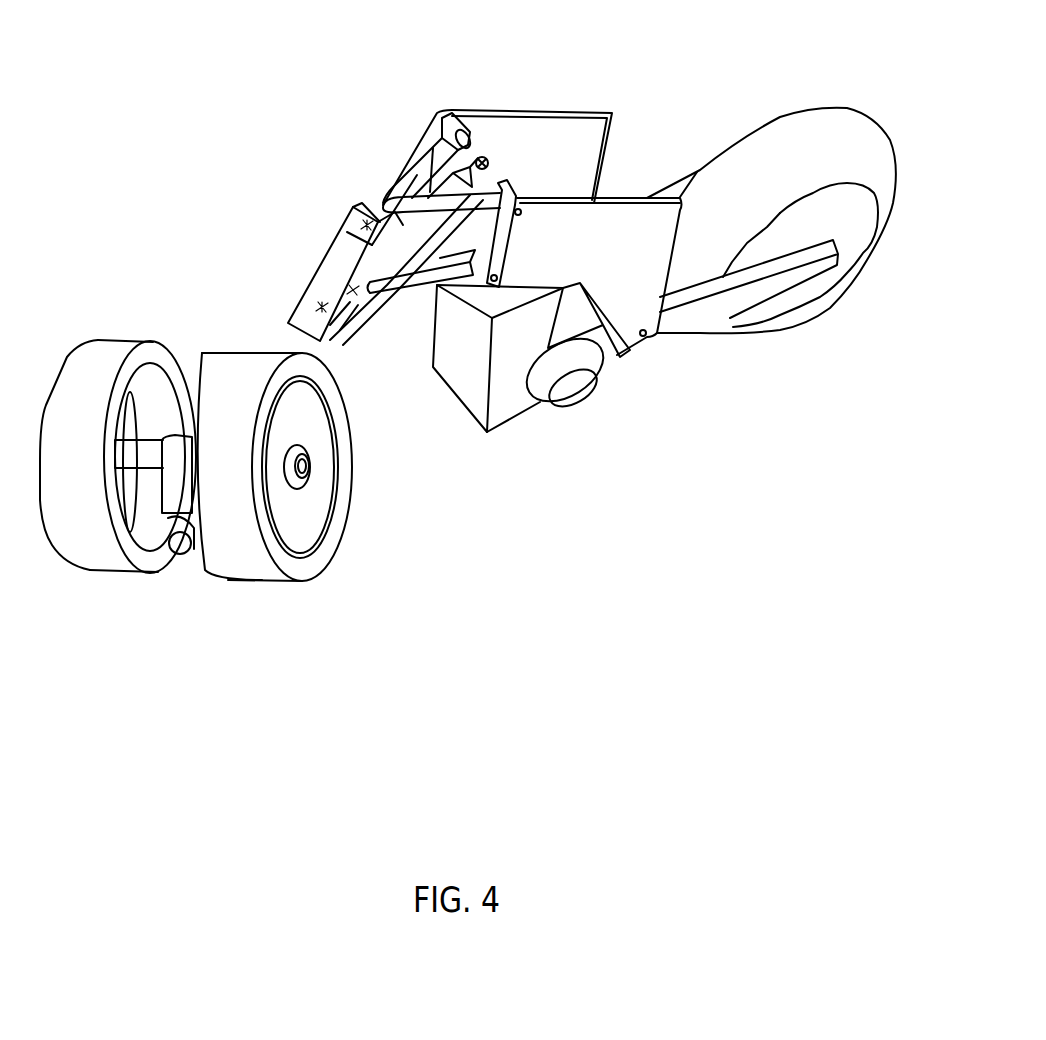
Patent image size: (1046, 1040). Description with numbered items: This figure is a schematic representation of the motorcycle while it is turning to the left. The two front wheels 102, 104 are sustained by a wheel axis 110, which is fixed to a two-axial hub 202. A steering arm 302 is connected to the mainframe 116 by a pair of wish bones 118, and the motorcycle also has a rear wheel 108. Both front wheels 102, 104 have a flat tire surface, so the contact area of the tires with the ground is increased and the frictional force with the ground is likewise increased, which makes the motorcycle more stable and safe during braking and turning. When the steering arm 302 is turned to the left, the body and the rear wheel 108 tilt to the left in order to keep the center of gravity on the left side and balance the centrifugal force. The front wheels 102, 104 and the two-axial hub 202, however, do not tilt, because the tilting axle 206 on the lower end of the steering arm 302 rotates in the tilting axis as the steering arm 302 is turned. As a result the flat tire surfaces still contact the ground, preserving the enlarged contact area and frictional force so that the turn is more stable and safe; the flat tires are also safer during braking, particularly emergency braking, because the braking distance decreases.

The front wheel 102 is at (343, 390).
The front wheel 104 is at (115, 350).
The rear wheel 108 is at (813, 123).
The wheel axis 110 is at (310, 477).
The mainframe 116 is at (530, 123).
The wish bones 118 is at (428, 162).
The 2-axial hub 202 is at (177, 453).
The tilting axle 206 is at (180, 550).
The steering arm 302 is at (333, 252).